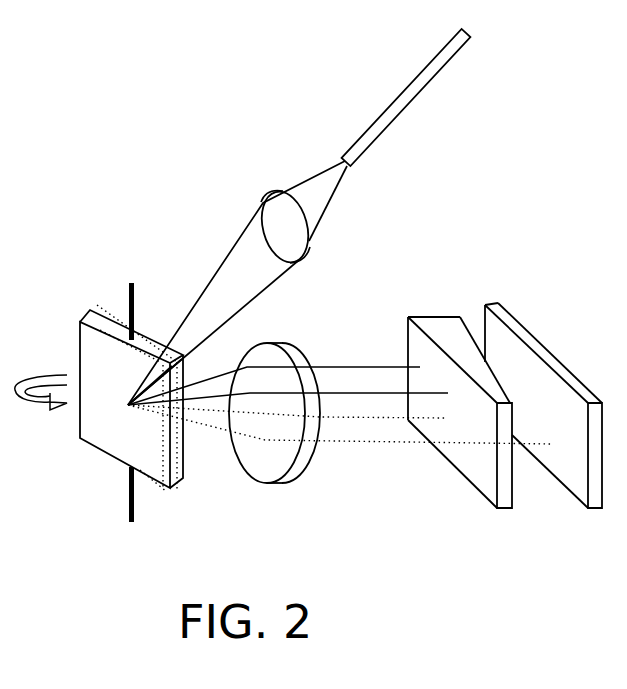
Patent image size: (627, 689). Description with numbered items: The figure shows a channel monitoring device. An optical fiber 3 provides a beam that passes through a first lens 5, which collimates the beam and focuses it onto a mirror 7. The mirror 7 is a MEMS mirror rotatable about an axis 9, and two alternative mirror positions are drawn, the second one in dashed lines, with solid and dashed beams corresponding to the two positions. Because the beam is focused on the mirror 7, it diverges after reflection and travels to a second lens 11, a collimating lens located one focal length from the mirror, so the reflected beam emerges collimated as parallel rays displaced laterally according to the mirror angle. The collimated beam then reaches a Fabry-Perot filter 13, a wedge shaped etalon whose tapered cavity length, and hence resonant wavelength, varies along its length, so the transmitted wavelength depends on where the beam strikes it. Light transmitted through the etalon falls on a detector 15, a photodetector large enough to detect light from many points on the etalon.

The optical fiber 3 is at (380, 137).
The first lens 5 is at (262, 202).
The mirror 7 is at (73, 367).
The axis 9 is at (125, 292).
The second lens 11 is at (292, 483).
The Fabry-Perot filter 13 is at (448, 327).
The detector 15 is at (498, 327).